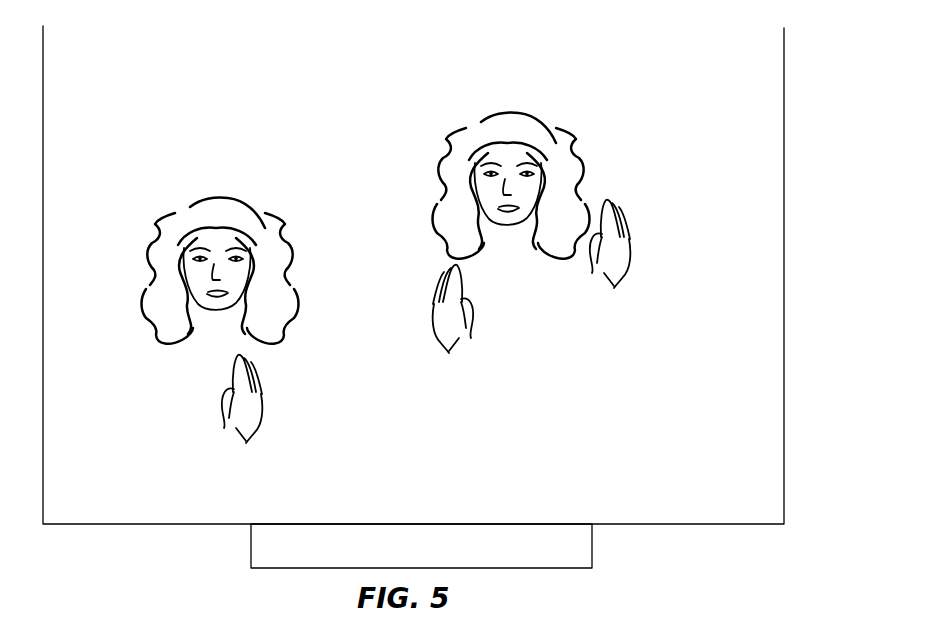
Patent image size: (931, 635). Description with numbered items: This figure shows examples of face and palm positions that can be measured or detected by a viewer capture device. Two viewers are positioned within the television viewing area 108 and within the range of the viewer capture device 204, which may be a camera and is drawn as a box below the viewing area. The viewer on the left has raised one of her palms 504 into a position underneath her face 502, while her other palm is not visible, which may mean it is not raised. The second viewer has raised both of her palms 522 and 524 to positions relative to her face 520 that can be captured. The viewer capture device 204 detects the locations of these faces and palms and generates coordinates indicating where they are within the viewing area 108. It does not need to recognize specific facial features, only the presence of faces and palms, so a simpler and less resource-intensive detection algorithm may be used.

The television viewing area 108 is at (80, 524).
The viewer capture device 204 is at (557, 566).
The face 502 is at (150, 226).
The palm 504 is at (263, 395).
The face 520 is at (445, 141).
The palm 522 is at (432, 292).
The palm 524 is at (628, 246).